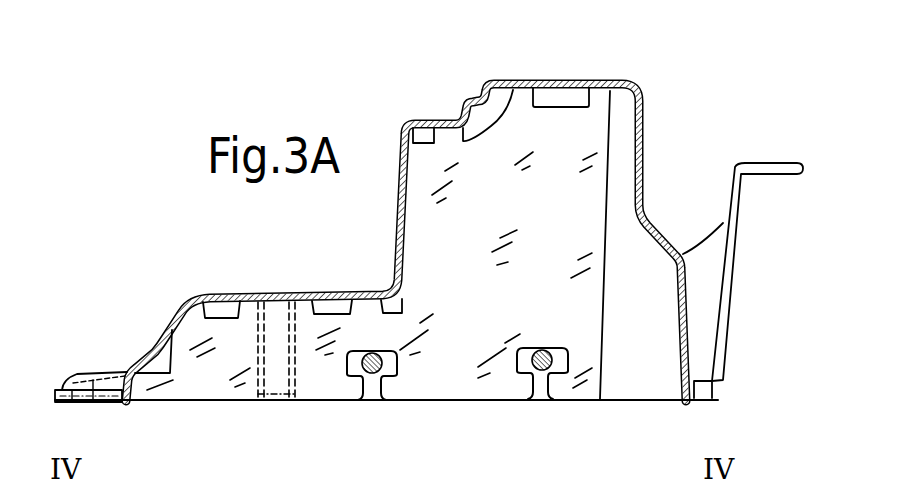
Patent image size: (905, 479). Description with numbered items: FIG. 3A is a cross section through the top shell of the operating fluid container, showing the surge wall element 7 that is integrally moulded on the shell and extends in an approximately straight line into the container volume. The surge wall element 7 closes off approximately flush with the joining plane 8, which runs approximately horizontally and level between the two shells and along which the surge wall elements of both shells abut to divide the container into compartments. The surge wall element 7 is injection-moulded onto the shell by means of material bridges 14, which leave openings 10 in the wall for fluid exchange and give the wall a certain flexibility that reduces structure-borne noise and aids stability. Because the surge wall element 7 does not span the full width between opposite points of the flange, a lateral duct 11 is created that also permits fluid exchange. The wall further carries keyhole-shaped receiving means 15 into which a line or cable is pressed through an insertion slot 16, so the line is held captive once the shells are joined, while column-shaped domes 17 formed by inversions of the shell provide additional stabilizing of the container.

The surge wall element 7 is at (565, 188).
The joining plane 8 is at (180, 400).
The opening 10 is at (567, 92).
The lateral duct 11 is at (640, 282).
The material bridge 14 is at (520, 88).
The keyhole-shaped receiving means 15 is at (560, 360).
The insertion slot 16 is at (541, 385).
The column-shaped dome 17 is at (278, 367).